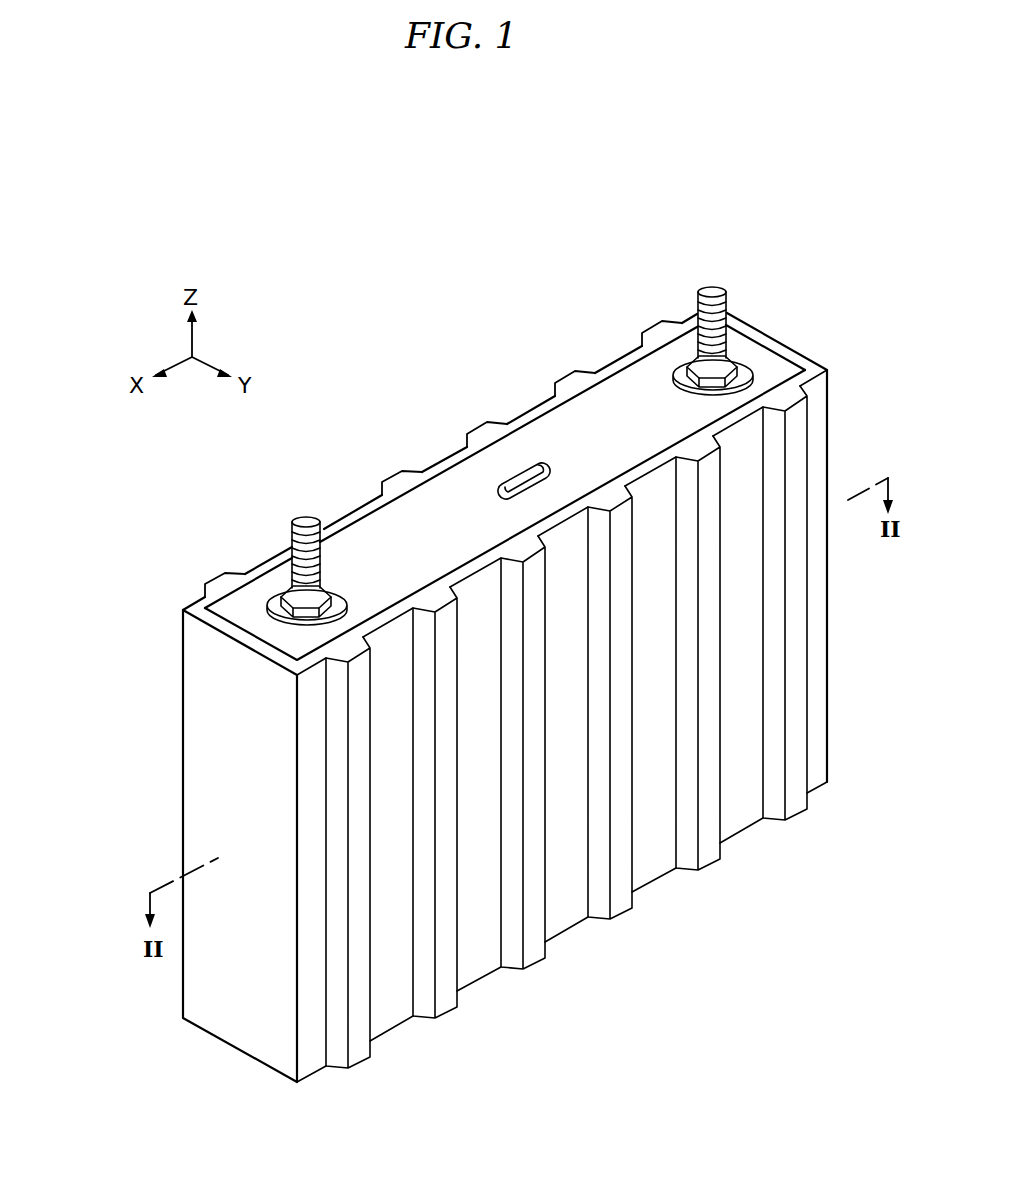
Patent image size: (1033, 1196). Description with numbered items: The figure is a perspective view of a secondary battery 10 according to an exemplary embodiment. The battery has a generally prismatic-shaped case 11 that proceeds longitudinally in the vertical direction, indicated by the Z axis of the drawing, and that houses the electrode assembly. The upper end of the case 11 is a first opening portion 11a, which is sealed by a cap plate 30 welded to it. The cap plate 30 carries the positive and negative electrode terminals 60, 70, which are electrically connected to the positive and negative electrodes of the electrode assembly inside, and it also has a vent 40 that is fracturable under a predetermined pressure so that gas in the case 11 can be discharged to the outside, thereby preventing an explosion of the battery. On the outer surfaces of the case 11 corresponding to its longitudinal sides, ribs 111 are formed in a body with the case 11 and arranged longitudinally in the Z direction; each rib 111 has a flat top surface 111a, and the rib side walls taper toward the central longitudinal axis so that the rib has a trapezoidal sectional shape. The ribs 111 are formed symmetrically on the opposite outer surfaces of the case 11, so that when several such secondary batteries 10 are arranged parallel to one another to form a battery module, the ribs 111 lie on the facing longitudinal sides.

The secondary battery 10 is at (417, 348).
The case 11 is at (828, 442).
The opening portion 11a is at (612, 372).
The cap plate 30 is at (404, 512).
The vent 40 is at (515, 470).
The positive electrode terminal 60 is at (312, 518).
The negative electrode terminal 70 is at (703, 290).
The rib 111 is at (345, 1071).
The flat top surface 111a is at (456, 1012).